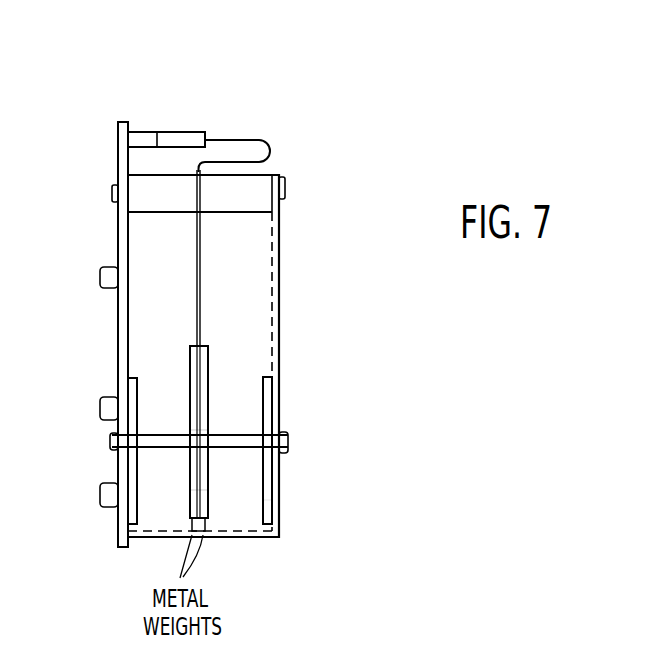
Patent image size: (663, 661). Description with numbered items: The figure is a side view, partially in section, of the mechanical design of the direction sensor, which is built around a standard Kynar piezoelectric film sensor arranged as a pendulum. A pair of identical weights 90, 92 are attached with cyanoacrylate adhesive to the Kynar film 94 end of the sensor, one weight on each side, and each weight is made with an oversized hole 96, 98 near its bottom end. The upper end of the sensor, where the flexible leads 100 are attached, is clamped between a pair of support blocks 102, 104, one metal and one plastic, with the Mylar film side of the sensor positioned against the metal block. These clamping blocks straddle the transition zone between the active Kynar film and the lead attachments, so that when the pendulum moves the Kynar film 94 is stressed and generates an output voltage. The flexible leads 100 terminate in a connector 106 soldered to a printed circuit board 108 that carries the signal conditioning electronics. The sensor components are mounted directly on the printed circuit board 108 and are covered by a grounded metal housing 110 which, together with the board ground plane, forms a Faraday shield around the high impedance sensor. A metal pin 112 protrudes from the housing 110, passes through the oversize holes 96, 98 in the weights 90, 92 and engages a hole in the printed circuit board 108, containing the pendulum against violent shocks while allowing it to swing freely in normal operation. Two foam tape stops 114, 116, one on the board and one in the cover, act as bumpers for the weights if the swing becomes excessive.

The weight 90 is at (190, 363).
The weight 92 is at (210, 362).
The Kynar film 94 is at (198, 272).
The oversized hole 96 is at (190, 460).
The oversized hole 98 is at (207, 462).
The flexible leads 100 is at (252, 133).
The support block 102 is at (138, 183).
The support block 104 is at (262, 178).
The connector 106 is at (158, 130).
The printed circuit board 108 is at (118, 125).
The grounded metal housing 110 is at (280, 405).
The metal pin 112 is at (288, 443).
The foam tape stop 114 is at (120, 520).
The foam tape stop 116 is at (263, 512).